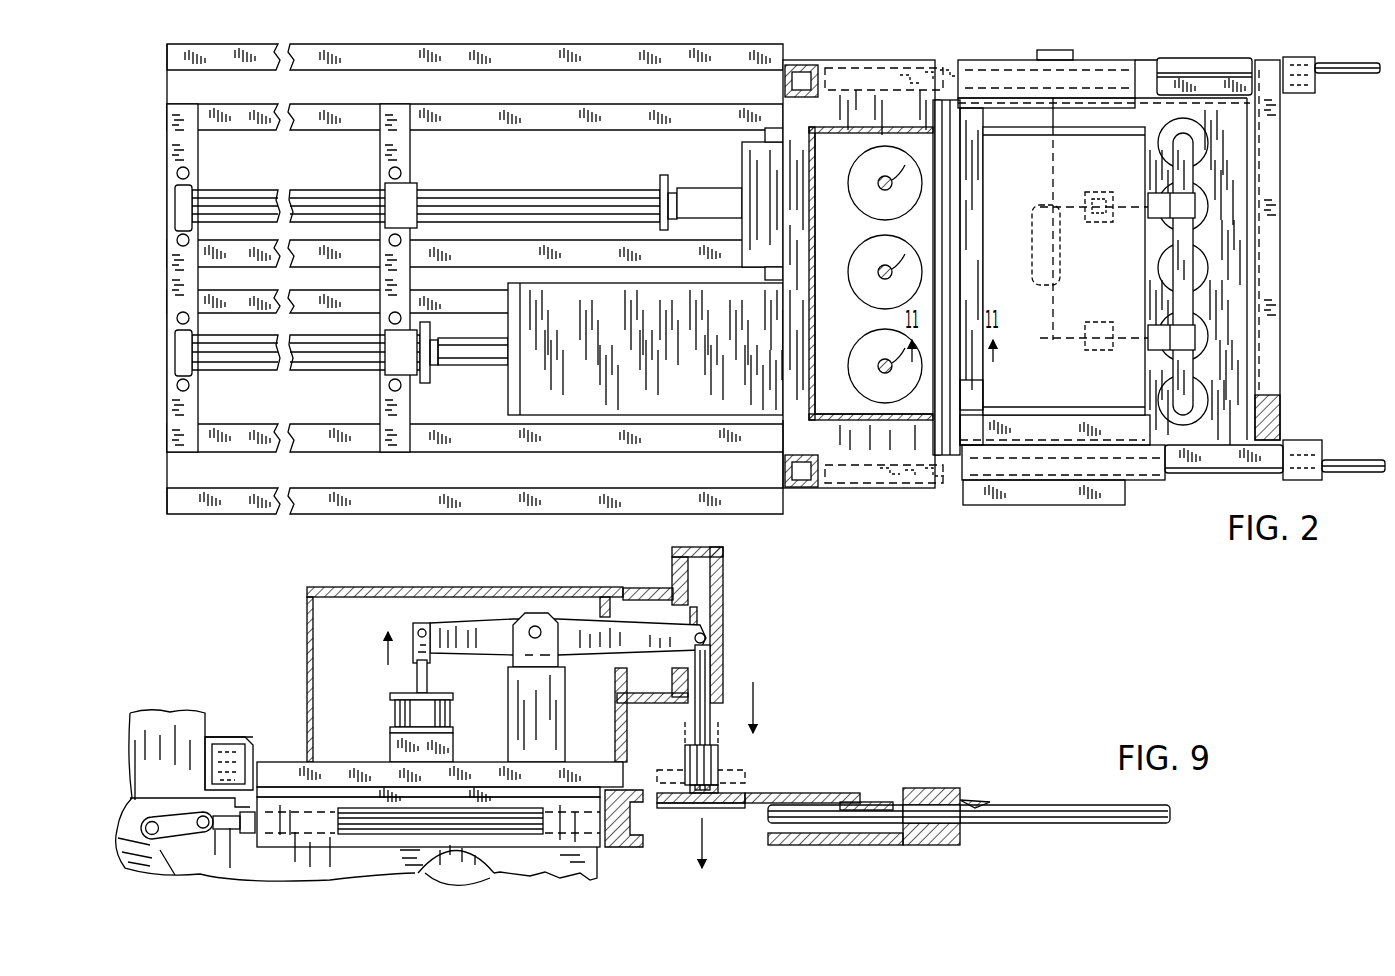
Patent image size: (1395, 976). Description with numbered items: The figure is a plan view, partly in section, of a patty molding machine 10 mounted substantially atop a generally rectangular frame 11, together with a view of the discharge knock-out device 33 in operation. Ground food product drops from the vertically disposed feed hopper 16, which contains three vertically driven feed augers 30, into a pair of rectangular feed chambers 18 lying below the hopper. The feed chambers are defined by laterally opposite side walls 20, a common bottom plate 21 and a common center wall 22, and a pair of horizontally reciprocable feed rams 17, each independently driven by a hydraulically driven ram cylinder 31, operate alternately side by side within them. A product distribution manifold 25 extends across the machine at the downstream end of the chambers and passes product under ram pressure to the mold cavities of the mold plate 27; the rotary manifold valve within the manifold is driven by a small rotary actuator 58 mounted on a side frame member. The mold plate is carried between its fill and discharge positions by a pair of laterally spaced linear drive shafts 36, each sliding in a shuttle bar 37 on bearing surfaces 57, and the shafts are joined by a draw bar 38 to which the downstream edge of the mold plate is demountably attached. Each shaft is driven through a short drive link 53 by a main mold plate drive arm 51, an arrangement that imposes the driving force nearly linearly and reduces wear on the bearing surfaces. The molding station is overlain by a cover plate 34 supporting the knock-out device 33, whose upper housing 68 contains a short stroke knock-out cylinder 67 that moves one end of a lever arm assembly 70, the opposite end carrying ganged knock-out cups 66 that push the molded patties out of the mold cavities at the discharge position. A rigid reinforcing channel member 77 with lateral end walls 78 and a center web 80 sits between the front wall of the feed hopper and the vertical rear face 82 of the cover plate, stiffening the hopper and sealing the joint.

In FIG. 2, the patty molding machine 10 is at (1090, 528).
In FIG. 2, the frame 11 is at (535, 514).
In FIG. 2, the feed hopper 16 is at (828, 148).
In FIG. 2, the feed rams 17 is at (773, 163).
In FIG. 2, the feed chambers 18 is at (830, 380).
In FIG. 2, the side walls 20 is at (778, 425).
In FIG. 2, the bottom plate 21 is at (857, 405).
In FIG. 2, the center wall 22 is at (768, 305).
In FIG. 9, the product distribution manifold 25 is at (468, 868).
In FIG. 9, the mold plate 27 is at (833, 795).
In FIG. 2, the feed augers 30 is at (867, 248).
In FIG. 2, the ram cylinder 31 is at (333, 210).
In FIG. 9, the knock-out device 33 is at (742, 632).
In FIG. 2, the cover plate 34 is at (975, 430).
In FIG. 9, the cover plate 34 is at (280, 777).
In FIG. 2, the linear drive shafts 36 is at (1353, 78).
In FIG. 9, the linear drive shafts 36 is at (360, 835).
In FIG. 2, the shuttle bar 37 is at (1158, 472).
In FIG. 9, the shuttle bar 37 is at (942, 843).
In FIG. 2, the draw bar 38 is at (1282, 305).
In FIG. 9, the draw bar 38 is at (880, 800).
In FIG. 2, the main mold plate drive arm 51 is at (875, 492).
In FIG. 9, the main mold plate drive arm 51 is at (170, 867).
In FIG. 2, the drive link 53 is at (933, 492).
In FIG. 9, the drive link 53 is at (180, 807).
In FIG. 9, the bearing surfaces 57 is at (975, 806).
In FIG. 2, the rotary actuator 58 is at (1057, 50).
In FIG. 2, the knock-out cups 66 is at (1205, 152).
In FIG. 9, the knock-out cups 66 is at (740, 760).
In FIG. 2, the knock-out cylinder 67 is at (1040, 232).
In FIG. 9, the knock-out cylinder 67 is at (400, 712).
In FIG. 2, the upper housing 68 is at (1105, 127).
In FIG. 9, the upper housing 68 is at (308, 648).
In FIG. 2, the lever arm assembly 70 is at (1050, 205).
In FIG. 9, the lever arm assembly 70 is at (602, 602).
In FIG. 2, the reinforcing channel member 77 is at (963, 318).
In FIG. 9, the reinforcing channel member 77 is at (233, 747).
In FIG. 2, the end walls 78 is at (948, 78).
In FIG. 2, the center web 80 is at (960, 250).
In FIG. 2, the vertical rear face 82 is at (958, 400).
In FIG. 9, the vertical rear face 82 is at (252, 746).